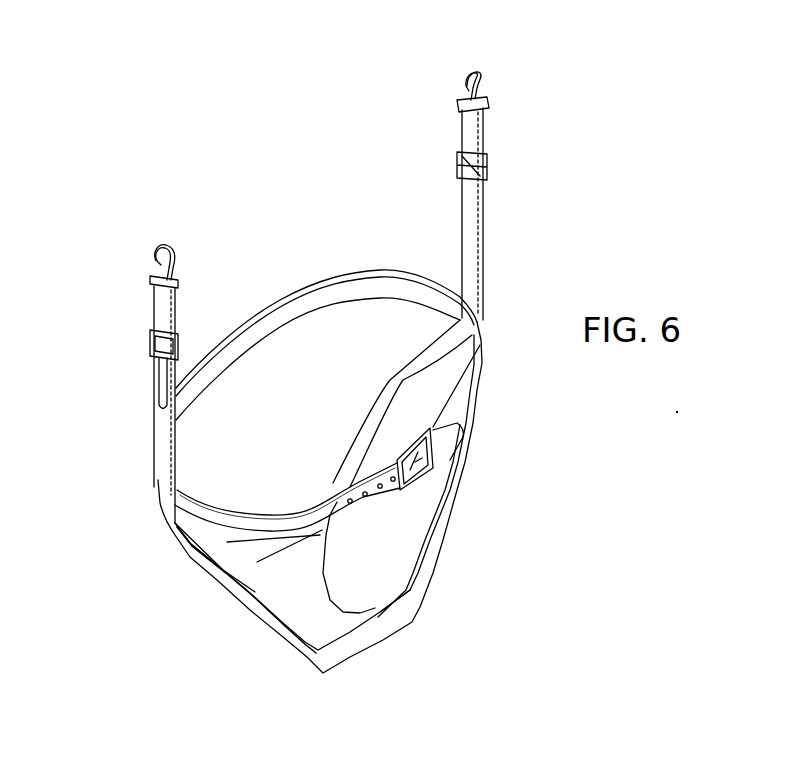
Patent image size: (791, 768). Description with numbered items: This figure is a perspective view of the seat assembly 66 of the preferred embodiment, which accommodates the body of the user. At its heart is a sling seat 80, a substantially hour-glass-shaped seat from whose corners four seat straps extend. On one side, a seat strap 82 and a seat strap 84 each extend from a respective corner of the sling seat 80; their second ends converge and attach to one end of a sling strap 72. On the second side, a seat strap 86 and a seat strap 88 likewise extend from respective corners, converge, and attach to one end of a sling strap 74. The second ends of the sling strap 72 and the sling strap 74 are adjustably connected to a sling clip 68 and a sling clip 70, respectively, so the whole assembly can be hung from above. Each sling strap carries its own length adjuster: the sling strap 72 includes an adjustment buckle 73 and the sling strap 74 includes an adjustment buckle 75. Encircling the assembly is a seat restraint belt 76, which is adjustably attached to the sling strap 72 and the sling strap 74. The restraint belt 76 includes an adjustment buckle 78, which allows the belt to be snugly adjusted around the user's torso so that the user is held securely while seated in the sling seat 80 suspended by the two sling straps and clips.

The seat assembly 66 is at (290, 492).
The sling clip 68 is at (155, 250).
The sling clip 70 is at (487, 72).
The sling strap 72 is at (153, 374).
The adjustment buckle 73 is at (180, 342).
The sling strap 74 is at (498, 198).
The adjustment buckle 75 is at (455, 162).
The seat restraint belt 76 is at (283, 333).
The adjustment buckle 78 is at (402, 495).
The sling seat 80 is at (245, 620).
The seat strap 82 is at (280, 603).
The seat strap 84 is at (182, 555).
The seat strap 86 is at (463, 487).
The seat strap 88 is at (413, 347).